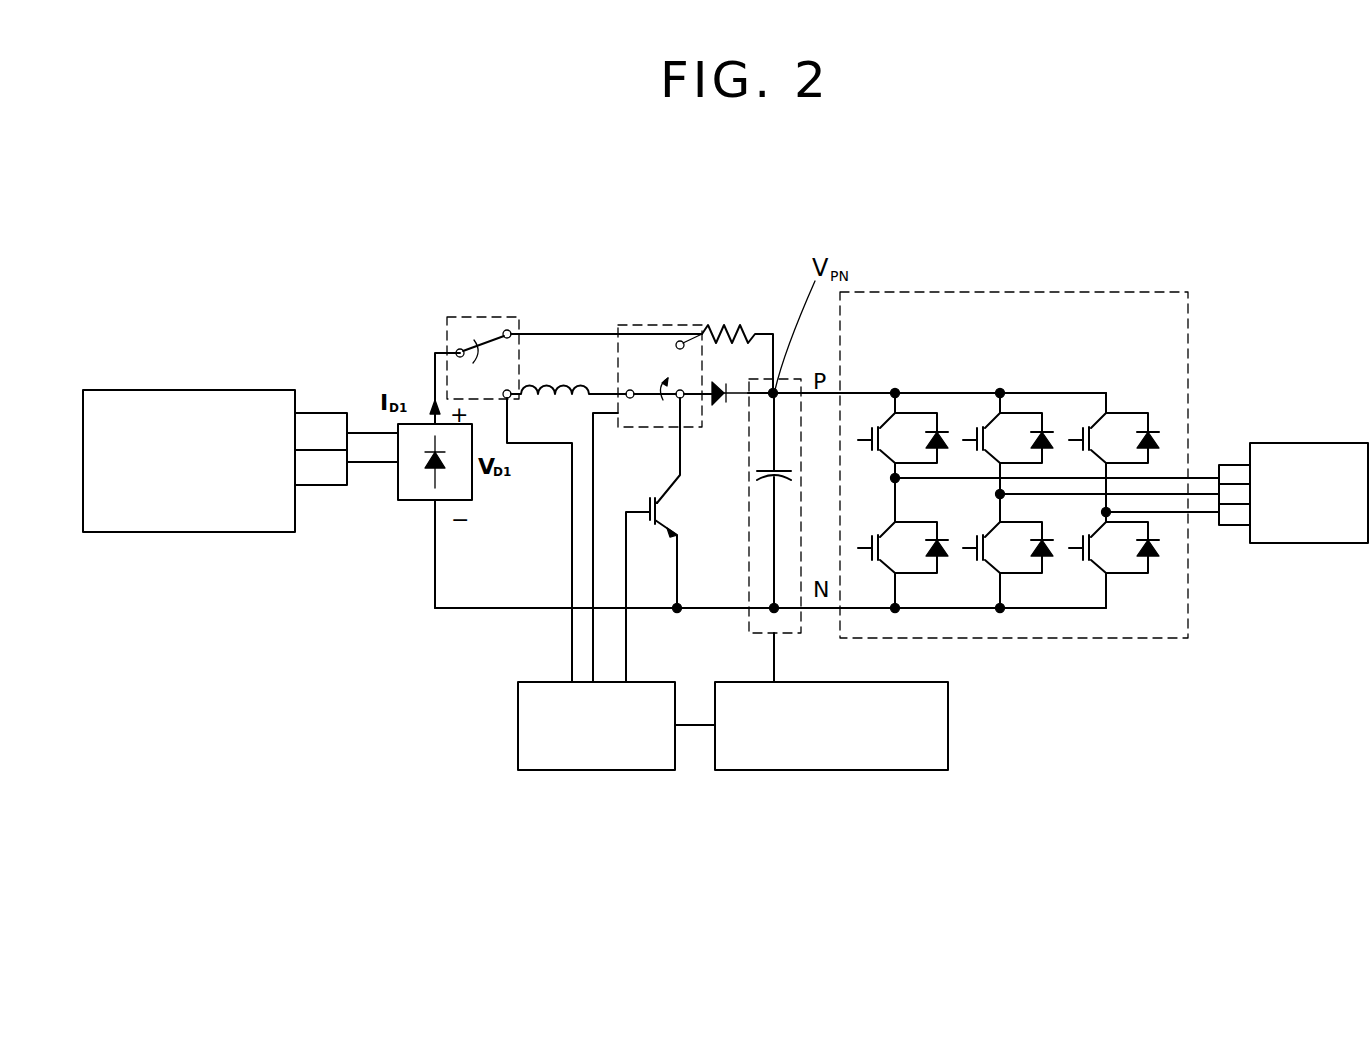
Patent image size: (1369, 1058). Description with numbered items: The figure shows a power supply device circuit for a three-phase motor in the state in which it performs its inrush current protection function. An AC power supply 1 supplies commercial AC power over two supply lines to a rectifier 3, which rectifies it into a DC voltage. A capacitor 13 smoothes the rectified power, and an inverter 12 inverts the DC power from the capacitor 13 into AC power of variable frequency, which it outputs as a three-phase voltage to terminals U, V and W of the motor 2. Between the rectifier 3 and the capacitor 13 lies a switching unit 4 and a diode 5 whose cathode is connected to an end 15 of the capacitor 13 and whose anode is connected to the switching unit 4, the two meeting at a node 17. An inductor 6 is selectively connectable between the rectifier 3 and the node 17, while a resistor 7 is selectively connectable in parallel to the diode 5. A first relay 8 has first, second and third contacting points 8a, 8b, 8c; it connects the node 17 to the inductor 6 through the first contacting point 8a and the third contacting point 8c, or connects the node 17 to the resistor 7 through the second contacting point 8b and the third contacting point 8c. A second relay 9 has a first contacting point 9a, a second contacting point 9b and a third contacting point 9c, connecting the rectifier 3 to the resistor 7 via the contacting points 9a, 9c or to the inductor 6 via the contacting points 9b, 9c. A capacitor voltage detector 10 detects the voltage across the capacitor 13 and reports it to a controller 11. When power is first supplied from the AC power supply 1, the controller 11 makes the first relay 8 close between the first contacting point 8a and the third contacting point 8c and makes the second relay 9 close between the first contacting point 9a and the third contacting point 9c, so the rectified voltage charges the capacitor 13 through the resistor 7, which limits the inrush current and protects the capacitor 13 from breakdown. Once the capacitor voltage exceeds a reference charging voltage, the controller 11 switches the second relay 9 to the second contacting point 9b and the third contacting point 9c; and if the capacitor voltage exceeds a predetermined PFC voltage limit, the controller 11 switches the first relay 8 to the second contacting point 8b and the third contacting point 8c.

The AC power supply 1 is at (205, 390).
The motor 2 is at (1305, 443).
The rectifier 3 is at (410, 500).
The switching unit 4 is at (653, 503).
The diode 5 is at (718, 405).
The inductor 6 is at (570, 387).
The resistor 7 is at (747, 327).
The first relay 8 is at (679, 364).
The first contacting point 8a is at (633, 400).
The second contacting point 8b is at (683, 325).
The third contacting point 8c is at (683, 399).
The second relay 9 is at (484, 363).
The first contacting point 9a is at (514, 329).
The second contacting point 9b is at (510, 400).
The third contacting point 9c is at (458, 347).
The capacitor voltage detector 10 is at (780, 772).
The controller 11 is at (597, 772).
The inverter 12 is at (1023, 292).
The capacitor 13 is at (764, 477).
The end of the capacitor 15 is at (775, 390).
The node 17 is at (688, 384).